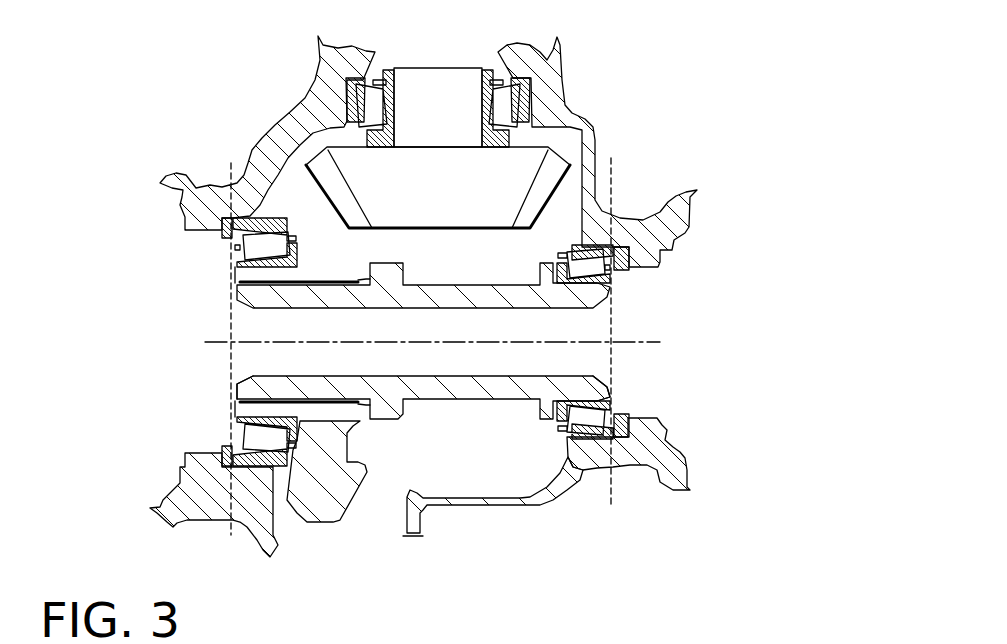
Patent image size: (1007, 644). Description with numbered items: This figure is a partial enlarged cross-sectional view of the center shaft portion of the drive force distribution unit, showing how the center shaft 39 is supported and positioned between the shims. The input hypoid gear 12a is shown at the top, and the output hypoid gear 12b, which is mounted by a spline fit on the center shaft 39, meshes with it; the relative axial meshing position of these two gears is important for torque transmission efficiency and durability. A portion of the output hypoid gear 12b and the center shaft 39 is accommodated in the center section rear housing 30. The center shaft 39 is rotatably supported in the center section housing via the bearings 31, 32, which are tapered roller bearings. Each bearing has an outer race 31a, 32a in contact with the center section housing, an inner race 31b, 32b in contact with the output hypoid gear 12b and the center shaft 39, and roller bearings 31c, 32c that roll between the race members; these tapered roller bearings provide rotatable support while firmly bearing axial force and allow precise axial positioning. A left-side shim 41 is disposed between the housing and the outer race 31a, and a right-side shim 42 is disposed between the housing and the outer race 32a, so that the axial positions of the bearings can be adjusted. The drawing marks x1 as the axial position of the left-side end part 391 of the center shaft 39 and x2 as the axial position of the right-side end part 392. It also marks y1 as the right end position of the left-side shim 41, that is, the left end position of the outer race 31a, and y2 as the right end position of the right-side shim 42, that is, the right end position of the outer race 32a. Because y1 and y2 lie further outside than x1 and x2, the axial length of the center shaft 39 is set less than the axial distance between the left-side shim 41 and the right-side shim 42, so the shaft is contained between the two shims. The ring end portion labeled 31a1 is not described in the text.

The input hypoid gear 12a is at (455, 82).
The output hypoid gear 12b is at (327, 442).
The center section rear housing 30 is at (507, 500).
The bearing 31 is at (322, 247).
The outer race 31a is at (300, 222).
The outer ring end portion 31a1 is at (222, 450).
The inner race 31b is at (266, 262).
The roller bearings 31c is at (266, 247).
The bearing 32 is at (542, 257).
The outer race 32a is at (578, 246).
The inner race 32b is at (562, 252).
The roller bearings 32c is at (583, 262).
The center shaft 39 is at (497, 388).
The left-side end part 391 is at (235, 383).
The right-side end part 392 is at (610, 381).
The left-side shim 41 is at (222, 222).
The right-side shim 42 is at (620, 247).
The position of the left-side end part x1 is at (231, 165).
The position of the right-side end part x2 is at (611, 163).
The right end position of the left-side shim y1 is at (228, 267).
The right end position of the right-side shim y2 is at (615, 292).